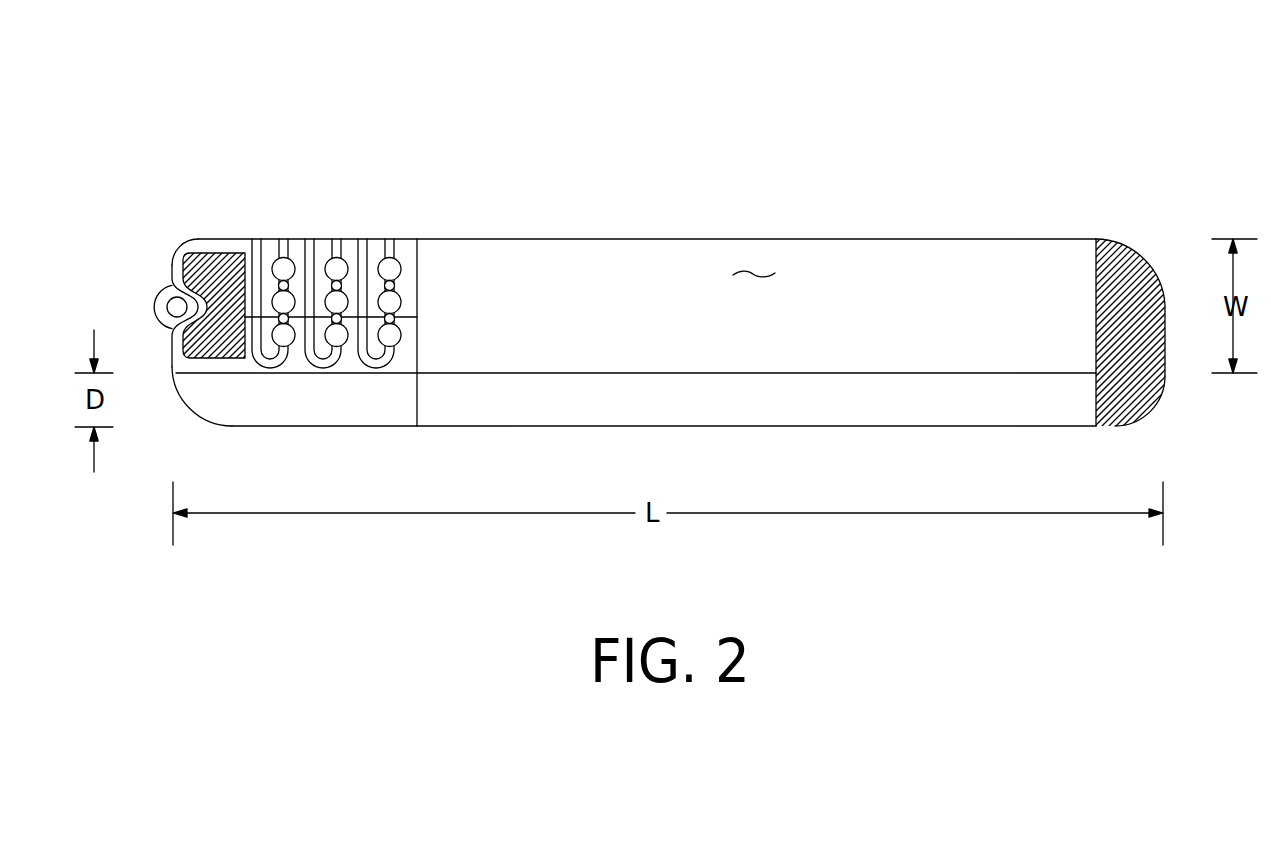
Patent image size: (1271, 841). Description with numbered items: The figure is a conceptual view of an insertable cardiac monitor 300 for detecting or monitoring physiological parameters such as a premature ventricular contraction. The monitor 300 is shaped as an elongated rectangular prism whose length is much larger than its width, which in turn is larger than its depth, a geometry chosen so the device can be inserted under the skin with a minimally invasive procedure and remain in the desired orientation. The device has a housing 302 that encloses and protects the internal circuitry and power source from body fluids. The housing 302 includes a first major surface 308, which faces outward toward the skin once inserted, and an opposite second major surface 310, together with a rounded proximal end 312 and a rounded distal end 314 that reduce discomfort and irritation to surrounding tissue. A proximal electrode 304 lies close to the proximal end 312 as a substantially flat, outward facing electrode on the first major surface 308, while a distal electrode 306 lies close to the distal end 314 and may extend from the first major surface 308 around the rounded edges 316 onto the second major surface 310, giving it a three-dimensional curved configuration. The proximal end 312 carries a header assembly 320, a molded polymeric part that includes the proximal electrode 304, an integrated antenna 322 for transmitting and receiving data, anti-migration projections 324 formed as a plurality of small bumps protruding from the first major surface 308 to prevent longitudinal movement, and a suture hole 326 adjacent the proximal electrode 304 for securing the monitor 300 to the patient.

The insertable cardiac monitor 300 is at (165, 118).
The housing 302 is at (994, 228).
The proximal electrode 304 is at (202, 253).
The distal electrode 306 is at (1158, 366).
The first major surface 308 is at (753, 270).
The second major surface 310 is at (822, 427).
The proximal end 312 is at (175, 245).
The distal end 314 is at (1150, 243).
The rounded edges 316 is at (177, 396).
The header assembly 320 is at (289, 437).
The integrated antenna 322 is at (363, 239).
The anti-migration projections 324 is at (400, 300).
The suture hole 326 is at (177, 307).